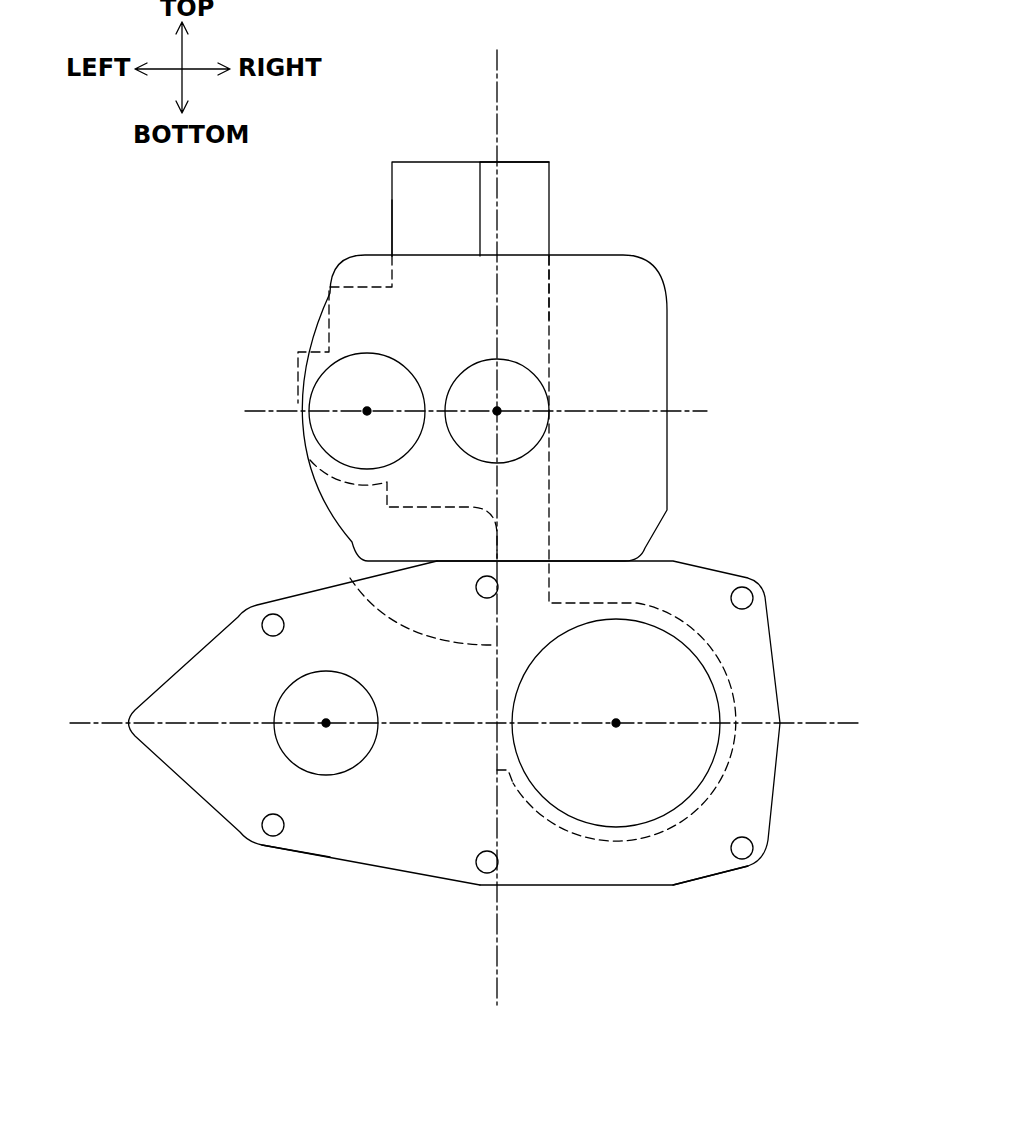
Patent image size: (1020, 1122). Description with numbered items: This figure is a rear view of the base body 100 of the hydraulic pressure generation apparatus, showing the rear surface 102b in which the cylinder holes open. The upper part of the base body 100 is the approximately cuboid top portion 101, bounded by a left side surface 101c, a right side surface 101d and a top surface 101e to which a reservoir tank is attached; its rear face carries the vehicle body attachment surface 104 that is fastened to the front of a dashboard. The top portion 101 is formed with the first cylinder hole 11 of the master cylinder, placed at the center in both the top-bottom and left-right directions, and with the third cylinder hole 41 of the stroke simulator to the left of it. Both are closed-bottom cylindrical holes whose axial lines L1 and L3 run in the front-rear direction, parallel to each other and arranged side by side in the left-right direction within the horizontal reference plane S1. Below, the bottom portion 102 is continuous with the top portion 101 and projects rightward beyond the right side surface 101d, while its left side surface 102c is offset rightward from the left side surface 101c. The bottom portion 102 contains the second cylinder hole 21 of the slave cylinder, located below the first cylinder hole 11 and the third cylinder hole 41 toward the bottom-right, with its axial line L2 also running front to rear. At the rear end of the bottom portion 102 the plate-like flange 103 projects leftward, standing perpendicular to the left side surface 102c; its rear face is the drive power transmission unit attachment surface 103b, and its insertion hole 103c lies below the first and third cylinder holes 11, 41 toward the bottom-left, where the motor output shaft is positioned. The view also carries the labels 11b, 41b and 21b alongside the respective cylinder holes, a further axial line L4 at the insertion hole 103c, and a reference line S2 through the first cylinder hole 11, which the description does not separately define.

The base body 100 is at (434, 156).
The top portion 101 is at (420, 193).
The left side surface 101c is at (392, 227).
The right side surface 101d is at (550, 297).
The top surface 101e is at (523, 162).
The vehicle body attachment surface 104 is at (628, 307).
The first cylinder hole 11 is at (612, 424).
The first valve bore 11b is at (535, 452).
The third cylinder hole 41 is at (317, 436).
The fourth valve bore 41b is at (318, 445).
The second cylinder hole 21 is at (702, 723).
The second valve bore 21b is at (706, 768).
The bottom portion 102 is at (698, 587).
The rear surface 102b is at (688, 857).
The left side surface 102c is at (350, 578).
The flange 103 is at (223, 667).
The drive power transmission unit attachment surface 103b is at (308, 820).
The insertion hole 103c is at (356, 764).
The axial line L1 is at (497, 411).
The axial line L2 is at (616, 723).
The axial line L3 is at (367, 411).
The fourth axis L4 is at (326, 723).
The horizontal reference plane S1 is at (687, 411).
The second reference plane S2 is at (500, 103).